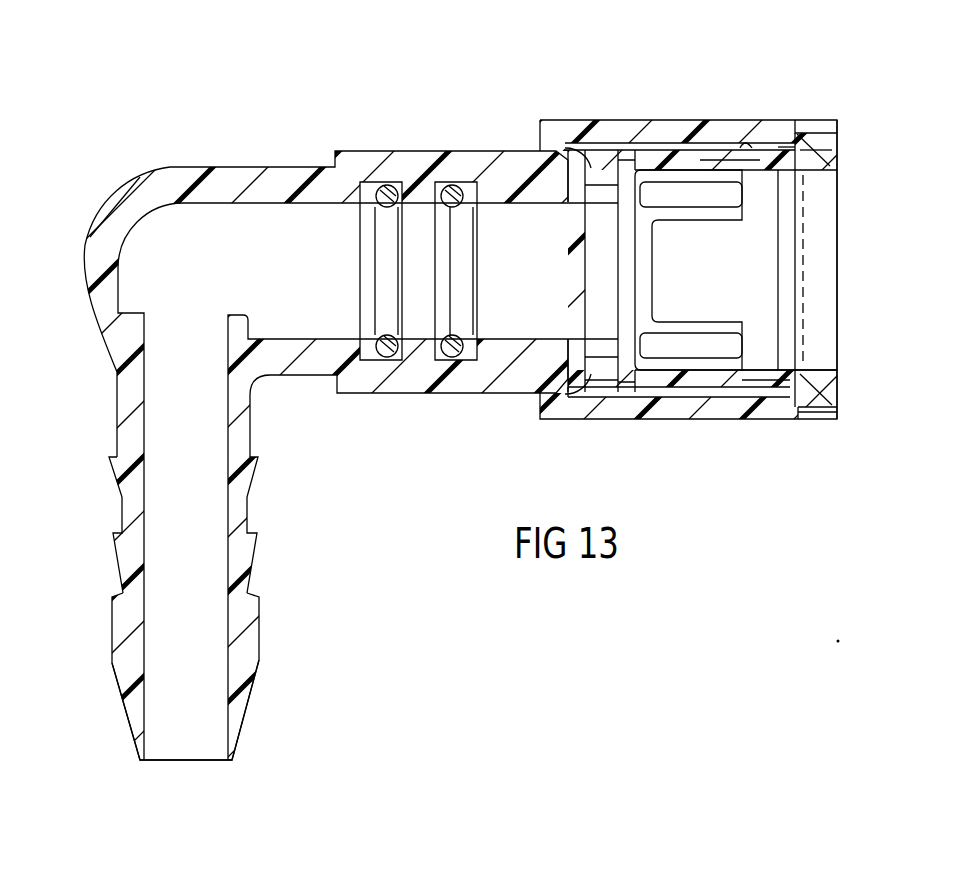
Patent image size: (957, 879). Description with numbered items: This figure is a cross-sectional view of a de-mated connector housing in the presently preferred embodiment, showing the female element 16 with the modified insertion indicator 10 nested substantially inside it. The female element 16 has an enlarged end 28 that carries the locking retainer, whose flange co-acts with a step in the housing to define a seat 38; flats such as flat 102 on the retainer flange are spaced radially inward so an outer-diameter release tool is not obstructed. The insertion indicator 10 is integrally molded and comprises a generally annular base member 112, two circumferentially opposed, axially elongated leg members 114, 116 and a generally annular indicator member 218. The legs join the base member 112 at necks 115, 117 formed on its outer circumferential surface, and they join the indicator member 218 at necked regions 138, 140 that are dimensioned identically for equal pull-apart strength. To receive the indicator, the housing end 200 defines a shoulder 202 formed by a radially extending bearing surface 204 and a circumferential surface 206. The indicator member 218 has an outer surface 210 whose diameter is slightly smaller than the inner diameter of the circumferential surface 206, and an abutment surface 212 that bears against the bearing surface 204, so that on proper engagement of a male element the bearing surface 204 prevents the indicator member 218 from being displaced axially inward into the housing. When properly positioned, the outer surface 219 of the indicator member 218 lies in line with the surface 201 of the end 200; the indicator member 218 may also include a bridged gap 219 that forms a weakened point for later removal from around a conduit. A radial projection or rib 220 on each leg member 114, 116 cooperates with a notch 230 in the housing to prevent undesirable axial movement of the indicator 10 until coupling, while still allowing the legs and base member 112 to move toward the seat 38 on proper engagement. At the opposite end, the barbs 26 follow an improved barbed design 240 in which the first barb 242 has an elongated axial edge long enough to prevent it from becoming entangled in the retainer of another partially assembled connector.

The insertion indicator 10 is at (838, 172).
The female element 16 is at (140, 177).
The external circumferential barbs 26 is at (257, 533).
The enlarged end 28 is at (685, 433).
The seat 38 is at (585, 161).
The flat 102 is at (565, 163).
The base member 112 is at (527, 358).
The leg member 114 is at (657, 161).
The neck 115 is at (630, 380).
The leg member 116 is at (663, 382).
The neck 117 is at (627, 161).
The necked region 138 is at (733, 372).
The necked region 140 is at (785, 173).
The end 200 is at (827, 420).
The surface 201 is at (838, 417).
The shoulder 202 is at (777, 440).
The bearing surface 204 is at (807, 417).
The circumferential surface 206 is at (837, 133).
The outer surface 210 is at (820, 123).
The abutment surface 212 is at (778, 147).
The indicator member 218 is at (825, 153).
The outer surface / gap 219 is at (838, 372).
The radial projection 220 is at (733, 161).
The notch 230 is at (747, 141).
The barbed design 240 is at (272, 683).
The first barb 242 is at (259, 657).